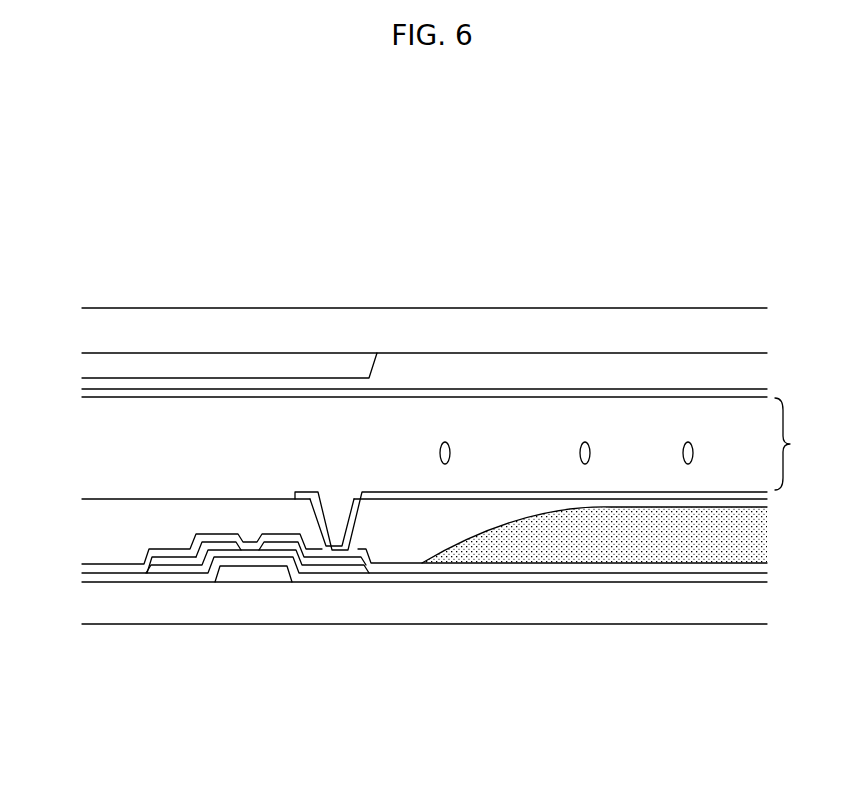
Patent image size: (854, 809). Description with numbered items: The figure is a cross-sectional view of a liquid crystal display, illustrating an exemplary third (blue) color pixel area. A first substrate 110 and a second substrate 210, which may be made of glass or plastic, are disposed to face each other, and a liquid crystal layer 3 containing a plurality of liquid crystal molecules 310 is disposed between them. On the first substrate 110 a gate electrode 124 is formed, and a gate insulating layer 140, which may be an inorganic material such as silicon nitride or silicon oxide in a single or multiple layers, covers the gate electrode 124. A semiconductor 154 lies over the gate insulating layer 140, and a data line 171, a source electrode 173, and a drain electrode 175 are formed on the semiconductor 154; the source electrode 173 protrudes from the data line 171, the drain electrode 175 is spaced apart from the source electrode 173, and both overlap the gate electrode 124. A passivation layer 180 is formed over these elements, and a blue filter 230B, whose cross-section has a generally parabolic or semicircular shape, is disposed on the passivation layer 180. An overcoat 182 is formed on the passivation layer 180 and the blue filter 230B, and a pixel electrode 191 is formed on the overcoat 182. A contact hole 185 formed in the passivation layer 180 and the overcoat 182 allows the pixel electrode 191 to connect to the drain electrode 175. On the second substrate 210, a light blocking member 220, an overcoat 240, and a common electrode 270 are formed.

The liquid crystal layer 3 is at (790, 444).
The first substrate 110 is at (614, 605).
The gate electrode 124 is at (260, 576).
The gate insulating layer 140 is at (541, 583).
The semiconductor 154 is at (230, 553).
The data line 171 is at (165, 562).
The source electrode 173 is at (208, 552).
The drain electrode 175 is at (307, 558).
The passivation layer 180 is at (481, 565).
The overcoat 182 is at (412, 545).
The contact hole 185 is at (345, 550).
The pixel electrode 191 is at (376, 492).
The second substrate 210 is at (643, 322).
The light blocking member 220 is at (203, 365).
The blue filter 230B is at (697, 548).
The overcoat 240 is at (447, 372).
The common electrode 270 is at (545, 393).
The liquid crystal molecules 310 is at (453, 453).